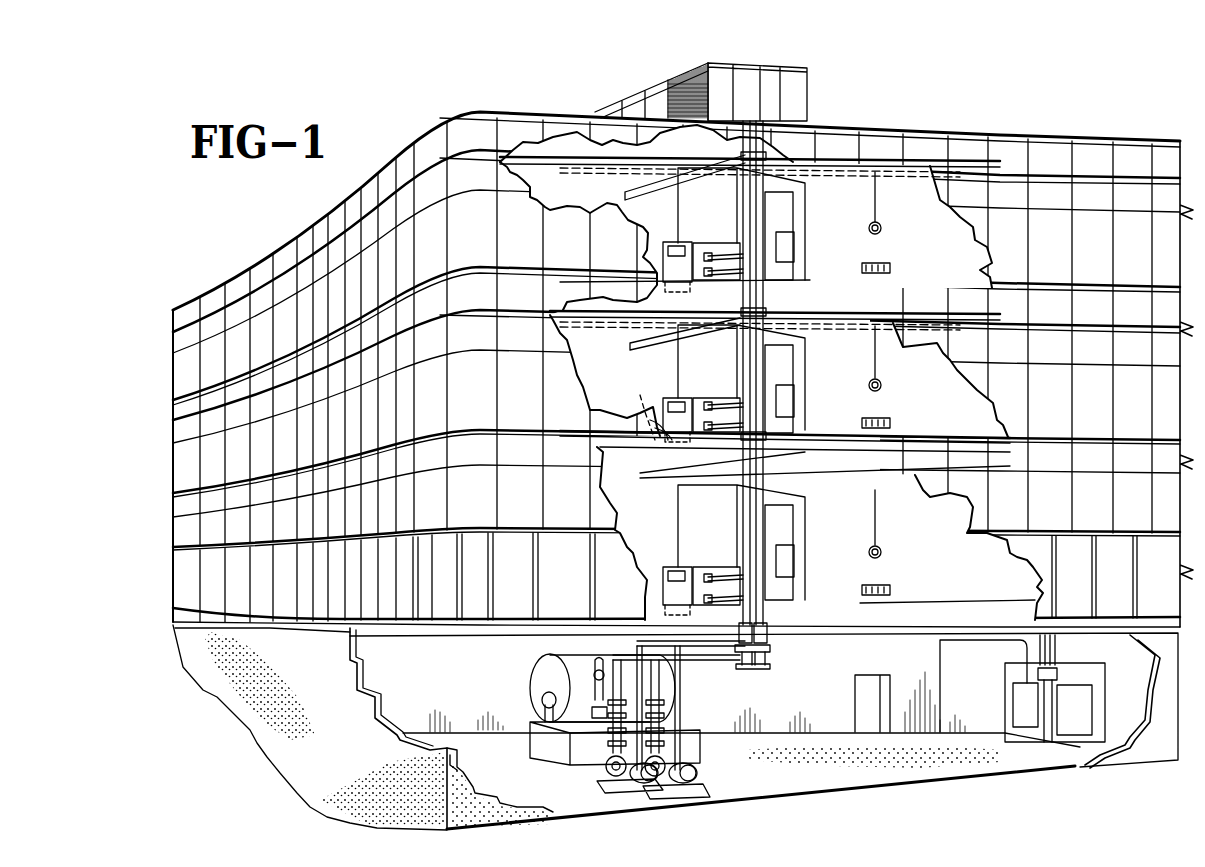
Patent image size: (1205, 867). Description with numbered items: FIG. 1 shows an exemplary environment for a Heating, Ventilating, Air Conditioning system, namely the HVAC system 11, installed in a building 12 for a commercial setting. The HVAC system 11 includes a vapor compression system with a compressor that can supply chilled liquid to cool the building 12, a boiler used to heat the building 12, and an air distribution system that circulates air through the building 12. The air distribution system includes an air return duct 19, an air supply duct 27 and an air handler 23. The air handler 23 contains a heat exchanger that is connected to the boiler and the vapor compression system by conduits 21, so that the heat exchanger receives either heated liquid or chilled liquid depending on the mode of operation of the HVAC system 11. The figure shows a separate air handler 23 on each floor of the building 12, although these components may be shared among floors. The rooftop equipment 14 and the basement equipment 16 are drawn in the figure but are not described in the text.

The air intake louver 11 is at (672, 77).
The building 12 is at (1053, 138).
The rooftop unit 14 is at (776, 68).
The storage tank 16 is at (541, 688).
The supply line 19 is at (651, 403).
The riser pipe 21 is at (750, 612).
The terminal unit 23 is at (707, 406).
The ceiling duct 27 is at (740, 157).